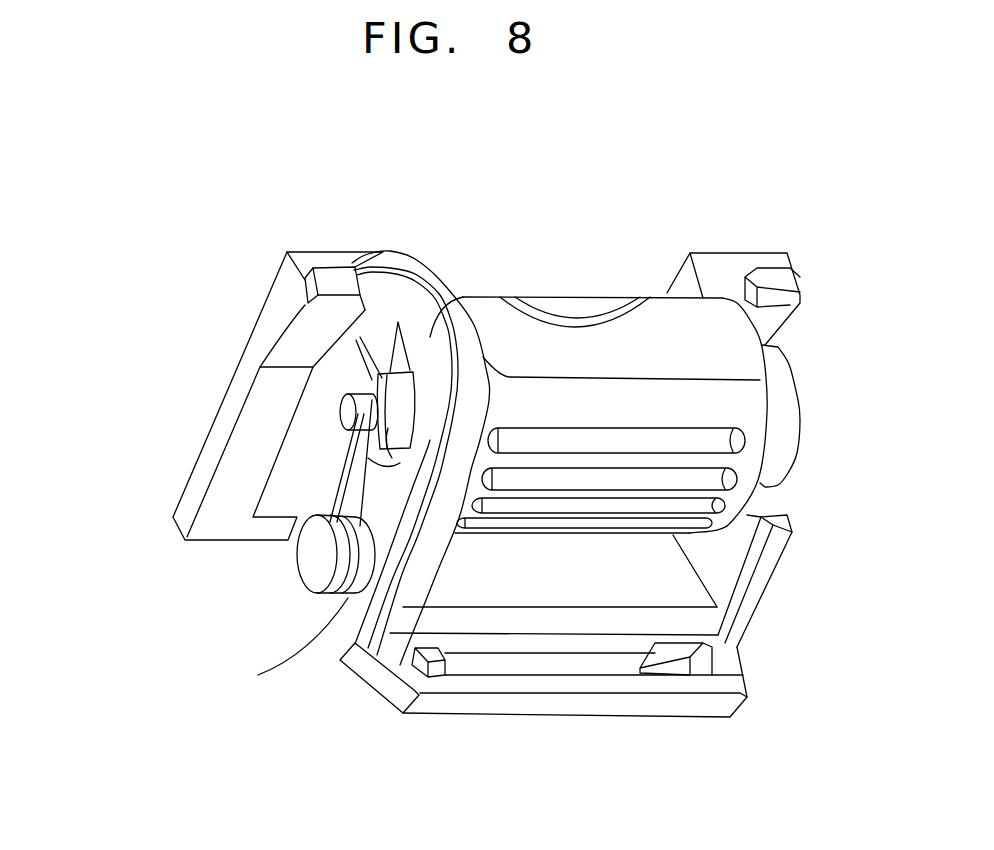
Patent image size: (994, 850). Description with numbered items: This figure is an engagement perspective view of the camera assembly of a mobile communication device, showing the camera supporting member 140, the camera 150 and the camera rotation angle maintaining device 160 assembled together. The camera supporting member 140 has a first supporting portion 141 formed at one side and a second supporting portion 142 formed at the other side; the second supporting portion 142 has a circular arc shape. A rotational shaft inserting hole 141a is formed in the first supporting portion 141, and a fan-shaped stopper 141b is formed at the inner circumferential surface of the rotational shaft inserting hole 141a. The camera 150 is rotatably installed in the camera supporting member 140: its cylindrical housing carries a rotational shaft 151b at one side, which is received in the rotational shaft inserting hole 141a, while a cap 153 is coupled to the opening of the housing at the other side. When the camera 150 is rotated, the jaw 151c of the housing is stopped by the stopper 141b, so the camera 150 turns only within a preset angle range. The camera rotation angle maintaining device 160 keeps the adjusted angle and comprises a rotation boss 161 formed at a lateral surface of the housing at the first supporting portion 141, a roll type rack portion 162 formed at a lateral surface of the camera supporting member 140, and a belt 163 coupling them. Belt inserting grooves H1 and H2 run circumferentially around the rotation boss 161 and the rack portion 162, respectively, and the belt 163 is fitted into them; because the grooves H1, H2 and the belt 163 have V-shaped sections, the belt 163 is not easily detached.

The camera supporting member 140 is at (369, 692).
The first supporting portion 141 is at (383, 547).
The rotational shaft inserting hole 141a is at (313, 595).
The stopper 141b is at (413, 328).
The second supporting portion 142 is at (757, 597).
The camera 150 is at (669, 320).
The rotational shaft 151b is at (408, 372).
The jaw 151c is at (358, 455).
The cap 153 is at (785, 413).
The camera rotation angle maintaining device 160 is at (102, 415).
The rotation boss 161 is at (343, 412).
The roll type rack portion 162 is at (308, 565).
The belt 163 is at (343, 466).
The belt inserting groove H1 is at (340, 355).
The belt inserting groove H2 is at (238, 678).